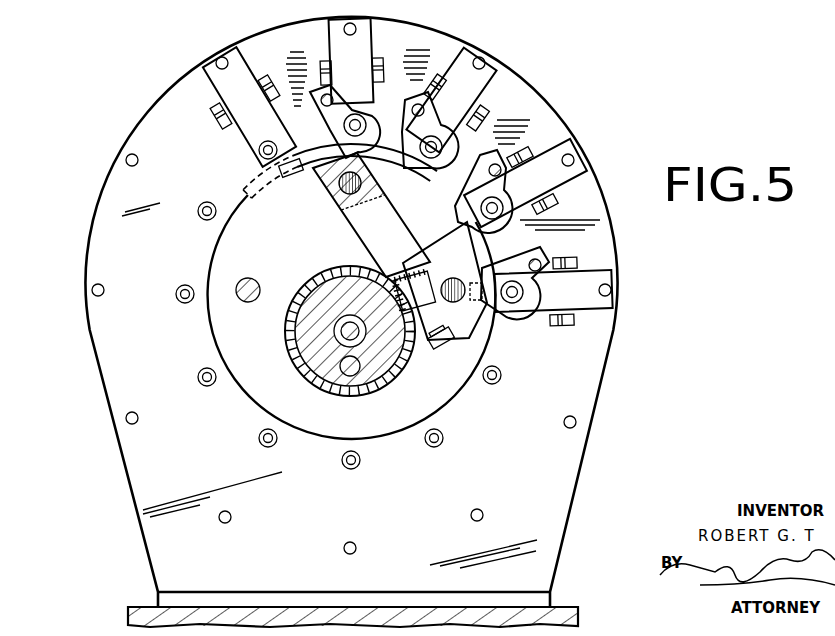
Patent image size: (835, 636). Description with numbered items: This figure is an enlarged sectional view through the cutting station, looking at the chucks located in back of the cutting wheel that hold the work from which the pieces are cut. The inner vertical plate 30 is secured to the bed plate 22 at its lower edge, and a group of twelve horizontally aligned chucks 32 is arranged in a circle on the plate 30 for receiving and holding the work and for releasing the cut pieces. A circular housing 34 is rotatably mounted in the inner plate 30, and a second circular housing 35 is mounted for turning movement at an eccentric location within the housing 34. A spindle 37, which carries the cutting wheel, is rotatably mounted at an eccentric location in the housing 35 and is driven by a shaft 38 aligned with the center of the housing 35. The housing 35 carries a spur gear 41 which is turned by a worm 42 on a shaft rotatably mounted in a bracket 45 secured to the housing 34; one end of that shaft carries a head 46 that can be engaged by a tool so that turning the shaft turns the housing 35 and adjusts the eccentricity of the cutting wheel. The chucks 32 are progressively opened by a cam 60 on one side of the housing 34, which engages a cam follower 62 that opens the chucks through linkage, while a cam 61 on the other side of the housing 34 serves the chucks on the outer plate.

The bed plate 22 is at (143, 613).
The inner vertical plate 30 is at (553, 465).
The chucks 32 is at (492, 384).
The circular housing 34 is at (275, 383).
The circular housing 35 is at (307, 318).
The spindle 37 is at (342, 373).
The shaft 38 is at (345, 333).
The spur gear 41 is at (362, 268).
The worm 42 is at (433, 262).
The bracket 45 is at (388, 247).
The head 46 is at (432, 346).
The cam 60 is at (257, 182).
The cam 61 is at (320, 195).
The cam follower 62 is at (418, 182).